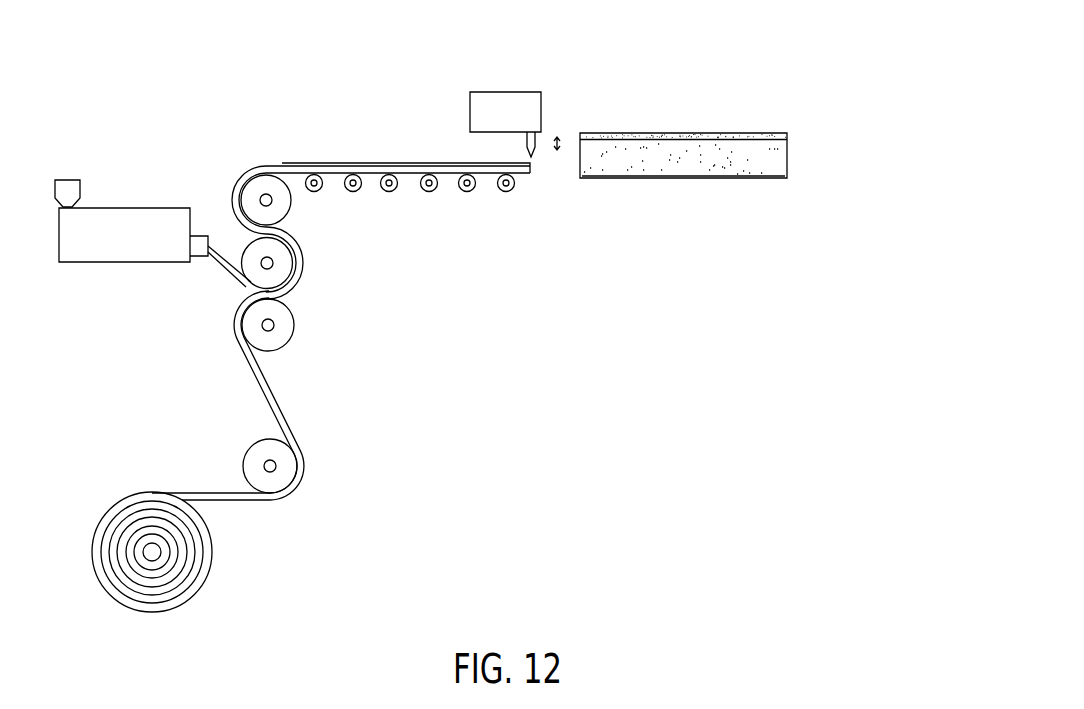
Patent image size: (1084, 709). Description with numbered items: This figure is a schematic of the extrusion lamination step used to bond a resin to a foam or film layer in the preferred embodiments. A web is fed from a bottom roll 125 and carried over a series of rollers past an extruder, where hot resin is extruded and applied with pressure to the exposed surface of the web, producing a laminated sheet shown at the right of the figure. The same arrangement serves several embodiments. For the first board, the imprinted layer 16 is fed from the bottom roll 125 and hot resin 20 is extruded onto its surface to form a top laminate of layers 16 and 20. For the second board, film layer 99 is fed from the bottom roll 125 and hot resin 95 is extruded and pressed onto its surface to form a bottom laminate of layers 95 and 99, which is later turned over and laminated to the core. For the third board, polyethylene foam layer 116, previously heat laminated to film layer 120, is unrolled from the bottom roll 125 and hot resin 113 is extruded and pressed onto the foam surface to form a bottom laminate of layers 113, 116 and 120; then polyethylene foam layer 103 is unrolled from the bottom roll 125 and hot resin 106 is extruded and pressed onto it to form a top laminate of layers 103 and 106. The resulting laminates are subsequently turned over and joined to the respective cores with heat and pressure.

The hot resin 20 is at (788, 133).
The hot resin 95 is at (788, 133).
The hot resin 113 is at (788, 134).
The hot resin 106 is at (788, 136).
The layer 16 is at (788, 155).
The film layer 99 is at (788, 157).
The polyethylene foam layer 116 is at (788, 158).
The film layer 120 is at (895, 195).
The polyethylene foam layer 103 is at (788, 160).
The bottom roll 125 is at (213, 556).